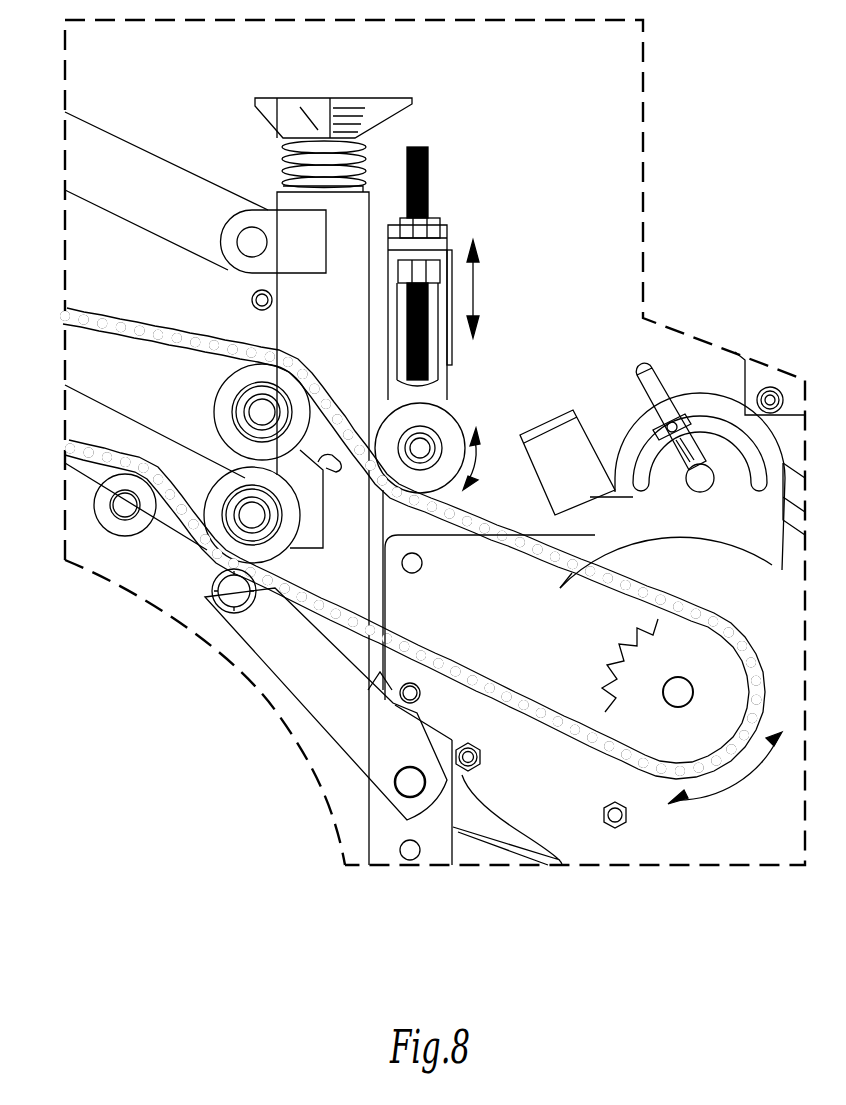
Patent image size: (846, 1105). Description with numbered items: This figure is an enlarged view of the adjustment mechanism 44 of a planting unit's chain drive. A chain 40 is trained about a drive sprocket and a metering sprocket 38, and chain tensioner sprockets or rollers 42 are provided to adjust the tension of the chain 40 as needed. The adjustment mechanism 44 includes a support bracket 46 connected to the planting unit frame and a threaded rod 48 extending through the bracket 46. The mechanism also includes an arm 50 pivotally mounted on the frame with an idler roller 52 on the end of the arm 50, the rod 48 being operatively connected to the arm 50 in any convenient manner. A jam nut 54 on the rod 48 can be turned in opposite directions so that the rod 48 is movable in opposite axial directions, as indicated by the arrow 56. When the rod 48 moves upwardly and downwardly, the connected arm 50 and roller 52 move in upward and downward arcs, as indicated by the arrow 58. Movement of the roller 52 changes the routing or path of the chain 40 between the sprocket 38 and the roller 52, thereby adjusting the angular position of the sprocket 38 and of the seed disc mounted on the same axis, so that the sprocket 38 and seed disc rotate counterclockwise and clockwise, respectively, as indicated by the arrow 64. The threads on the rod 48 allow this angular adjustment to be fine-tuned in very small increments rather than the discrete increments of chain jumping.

The metering sprocket 38 is at (622, 660).
The chain 40 is at (147, 333).
The chain tensioner sprockets or rollers 42 is at (228, 397).
The adjustment mechanism 44 is at (475, 273).
The support bracket 46 is at (449, 383).
The threaded rod 48 is at (430, 170).
The arm 50 is at (357, 410).
The idler roller 52 is at (447, 421).
The jam nut 54 is at (438, 228).
The arrow 56 is at (493, 338).
The arrow 58 is at (484, 472).
The arrow 64 is at (735, 795).